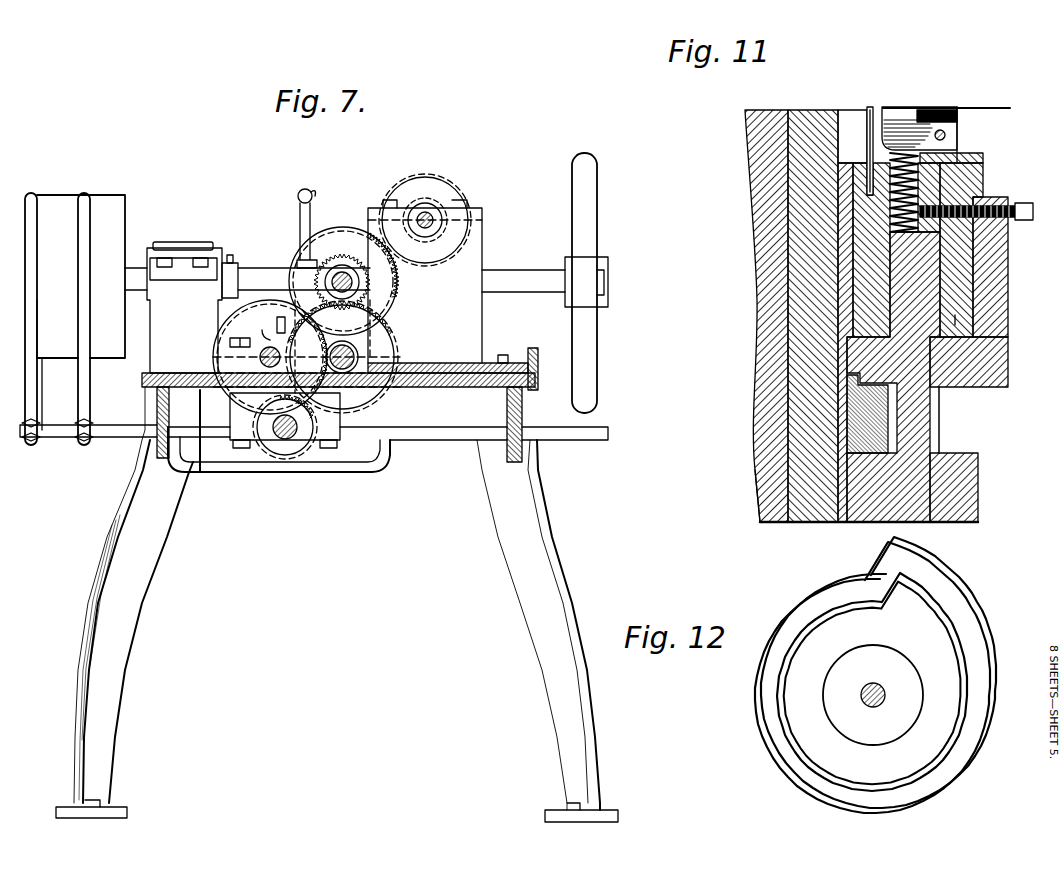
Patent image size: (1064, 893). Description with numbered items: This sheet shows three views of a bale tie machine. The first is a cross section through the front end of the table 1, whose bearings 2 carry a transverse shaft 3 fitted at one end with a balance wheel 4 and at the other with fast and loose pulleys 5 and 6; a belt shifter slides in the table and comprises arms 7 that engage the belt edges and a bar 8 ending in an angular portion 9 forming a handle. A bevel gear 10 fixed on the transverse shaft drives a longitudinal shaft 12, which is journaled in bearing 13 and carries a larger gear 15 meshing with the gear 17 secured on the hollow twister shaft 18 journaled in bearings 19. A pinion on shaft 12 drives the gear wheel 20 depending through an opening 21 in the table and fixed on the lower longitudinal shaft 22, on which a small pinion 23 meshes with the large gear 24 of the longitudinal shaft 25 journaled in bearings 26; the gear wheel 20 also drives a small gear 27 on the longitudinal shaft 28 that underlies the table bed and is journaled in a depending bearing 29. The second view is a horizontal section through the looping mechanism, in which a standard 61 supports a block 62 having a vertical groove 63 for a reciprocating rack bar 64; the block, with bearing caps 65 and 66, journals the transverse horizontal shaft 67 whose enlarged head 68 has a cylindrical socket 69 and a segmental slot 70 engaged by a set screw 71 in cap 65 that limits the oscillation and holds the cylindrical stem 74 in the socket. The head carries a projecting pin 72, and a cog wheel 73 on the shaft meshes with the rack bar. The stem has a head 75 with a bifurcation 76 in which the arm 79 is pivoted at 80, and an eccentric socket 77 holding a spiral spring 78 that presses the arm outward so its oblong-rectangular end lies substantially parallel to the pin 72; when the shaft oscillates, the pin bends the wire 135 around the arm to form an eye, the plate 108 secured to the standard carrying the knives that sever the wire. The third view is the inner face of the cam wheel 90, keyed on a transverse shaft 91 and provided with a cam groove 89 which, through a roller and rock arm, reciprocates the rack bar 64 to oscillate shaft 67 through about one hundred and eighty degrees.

In FIG. 7, the table 1 is at (532, 348).
In FIG. 7, the bearings 2 is at (180, 248).
In FIG. 7, the transverse shaft 3 is at (528, 275).
In FIG. 7, the balance wheel 4 is at (590, 158).
In FIG. 7, the fast pulley 5 is at (103, 215).
In FIG. 7, the loose pulley 6 is at (52, 215).
In FIG. 7, the arms 7 is at (82, 394).
In FIG. 7, the bar 8 is at (122, 436).
In FIG. 7, the angular portion 9 is at (582, 440).
In FIG. 7, the bevel gear 10 is at (344, 272).
In FIG. 7, the longitudinal shaft 12 is at (335, 272).
In FIG. 7, the bearing 13 is at (290, 263).
In FIG. 7, the larger gear 15 is at (338, 232).
In FIG. 7, the gear 17 is at (414, 180).
In FIG. 7, the twister shaft 18 is at (440, 210).
In FIG. 7, the bearings 19 is at (484, 250).
In FIG. 7, the gear wheel 20 is at (380, 340).
In FIG. 7, the opening 21 is at (388, 385).
In FIG. 7, the longitudinal shaft 22 is at (350, 366).
In FIG. 7, the small pinion 23 is at (343, 344).
In FIG. 7, the large gear 24 is at (245, 325).
In FIG. 7, the longitudinal shaft 25 is at (265, 366).
In FIG. 7, the bearings 26 is at (276, 326).
In FIG. 7, the small gear 27 is at (305, 445).
In FIG. 7, the longitudinal shaft 28 is at (287, 442).
In FIG. 7, the bearing 29 is at (235, 422).
In FIG. 11, the standard 61 is at (808, 522).
In FIG. 11, the block 62 is at (790, 345).
In FIG. 11, the vertical groove 63 is at (840, 418).
In FIG. 11, the rack bar 64 is at (860, 420).
In FIG. 11, the bearing cap 65 is at (1009, 355).
In FIG. 11, the bearing cap 66 is at (979, 493).
In FIG. 11, the transverse horizontal shaft 67 is at (955, 510).
In FIG. 11, the enlarged head 68 is at (960, 320).
In FIG. 11, the cylindrical socket 69 is at (980, 287).
In FIG. 11, the segmental slot 70 is at (985, 195).
In FIG. 11, the set screw 71 is at (1028, 221).
In FIG. 11, the pin 72 is at (872, 107).
In FIG. 11, the cog wheel 73 is at (942, 427).
In FIG. 11, the cylindrical stem 74 is at (930, 275).
In FIG. 11, the head 75 is at (960, 158).
In FIG. 11, the bifurcation 76 is at (945, 110).
In FIG. 11, the eccentric socket 77 is at (880, 205).
In FIG. 11, the spiral spring 78 is at (895, 225).
In FIG. 11, the arm 79 is at (905, 118).
In FIG. 11, the pivot 80 is at (946, 135).
In FIG. 11, the plate 108 is at (757, 500).
In FIG. 11, the wire 135 is at (1010, 102).
In FIG. 12, the cam groove 89 is at (762, 700).
In FIG. 12, the cam wheel 90 is at (872, 682).
In FIG. 12, the transverse shaft 91 is at (873, 684).